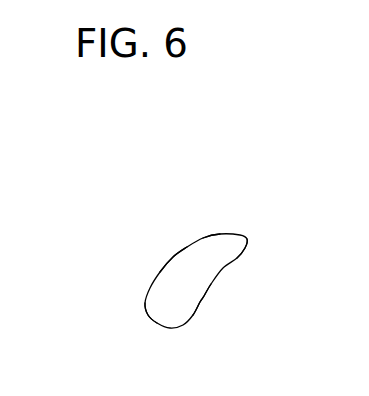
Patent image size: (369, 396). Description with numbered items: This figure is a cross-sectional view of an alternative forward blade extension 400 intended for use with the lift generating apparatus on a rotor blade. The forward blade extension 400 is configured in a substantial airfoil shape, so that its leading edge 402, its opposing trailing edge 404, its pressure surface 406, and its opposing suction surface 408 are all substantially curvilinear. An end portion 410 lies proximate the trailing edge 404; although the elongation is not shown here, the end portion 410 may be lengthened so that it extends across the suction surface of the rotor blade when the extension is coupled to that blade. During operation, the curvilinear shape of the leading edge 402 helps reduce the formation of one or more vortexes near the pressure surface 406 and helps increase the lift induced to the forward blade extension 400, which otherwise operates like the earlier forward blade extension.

The forward blade extension 400 is at (104, 229).
The leading edge 402 is at (152, 320).
The trailing edge 404 is at (247, 239).
The pressure surface 406 is at (204, 296).
The suction surface 408 is at (171, 250).
The end portion 410 is at (241, 213).